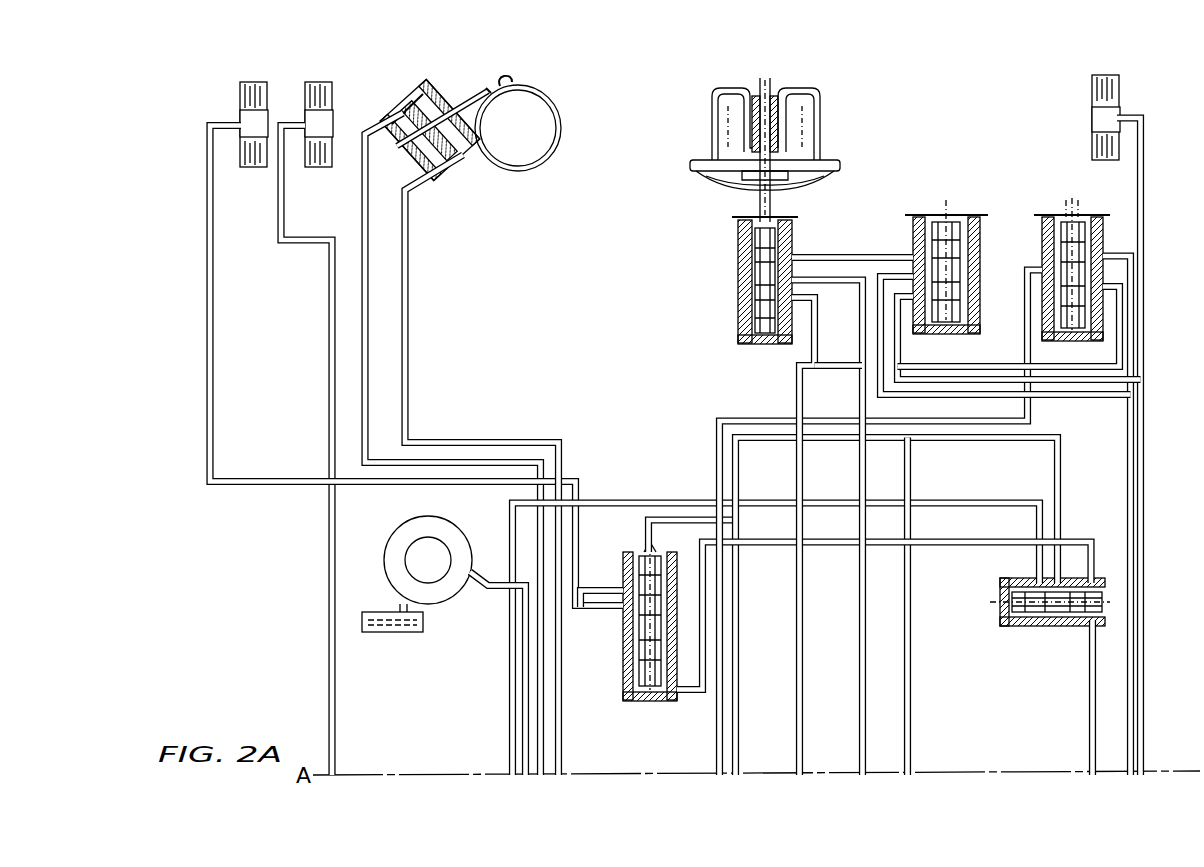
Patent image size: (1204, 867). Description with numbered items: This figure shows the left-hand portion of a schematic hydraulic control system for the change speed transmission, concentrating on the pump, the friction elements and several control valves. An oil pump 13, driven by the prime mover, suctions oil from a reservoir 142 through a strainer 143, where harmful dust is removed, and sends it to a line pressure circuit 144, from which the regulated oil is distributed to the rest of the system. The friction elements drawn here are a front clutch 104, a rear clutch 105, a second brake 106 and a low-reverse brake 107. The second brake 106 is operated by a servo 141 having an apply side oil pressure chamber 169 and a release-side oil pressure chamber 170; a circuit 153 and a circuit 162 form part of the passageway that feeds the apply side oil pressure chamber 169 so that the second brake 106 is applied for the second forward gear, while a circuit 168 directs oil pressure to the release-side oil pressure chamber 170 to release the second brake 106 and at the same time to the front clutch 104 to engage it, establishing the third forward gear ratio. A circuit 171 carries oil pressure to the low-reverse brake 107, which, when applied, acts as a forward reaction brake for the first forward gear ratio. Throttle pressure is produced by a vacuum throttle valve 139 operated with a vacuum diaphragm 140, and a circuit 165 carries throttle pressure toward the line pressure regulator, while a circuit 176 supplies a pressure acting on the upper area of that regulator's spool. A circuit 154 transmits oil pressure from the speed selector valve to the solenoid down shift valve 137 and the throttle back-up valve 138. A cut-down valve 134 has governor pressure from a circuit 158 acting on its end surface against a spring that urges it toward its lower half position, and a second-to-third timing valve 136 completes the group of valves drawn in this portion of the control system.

The oil pump 13 is at (300, 540).
The front clutch 104 is at (203, 58).
The rear clutch 105 is at (323, 50).
The second brake 106 is at (587, 88).
The low-reverse brake 107 is at (1167, 105).
The cut-down valve 134 is at (1100, 574).
The 2-3 timing valve 136 is at (623, 682).
The solenoid down shift valve 137 is at (1120, 203).
The throttle back-up valve 138 is at (990, 203).
The vacuum throttle valve 139 is at (845, 213).
The vacuum diaphragm 140 is at (870, 121).
The servo 141 is at (432, 112).
The reservoir 142 is at (300, 606).
The strainer 143 is at (396, 606).
The line pressure circuit 144 is at (493, 590).
The circuit 153 is at (328, 348).
The circuit 154 is at (1127, 256).
The circuit 158 is at (1089, 752).
The circuit 162 is at (361, 198).
The circuit 165 is at (858, 400).
The circuit 168 is at (214, 198).
The apply side oil pressure chamber 169 is at (404, 112).
The release-side oil pressure chamber 170 is at (456, 158).
The circuit 171 is at (1144, 232).
The circuit 176 is at (588, 506).